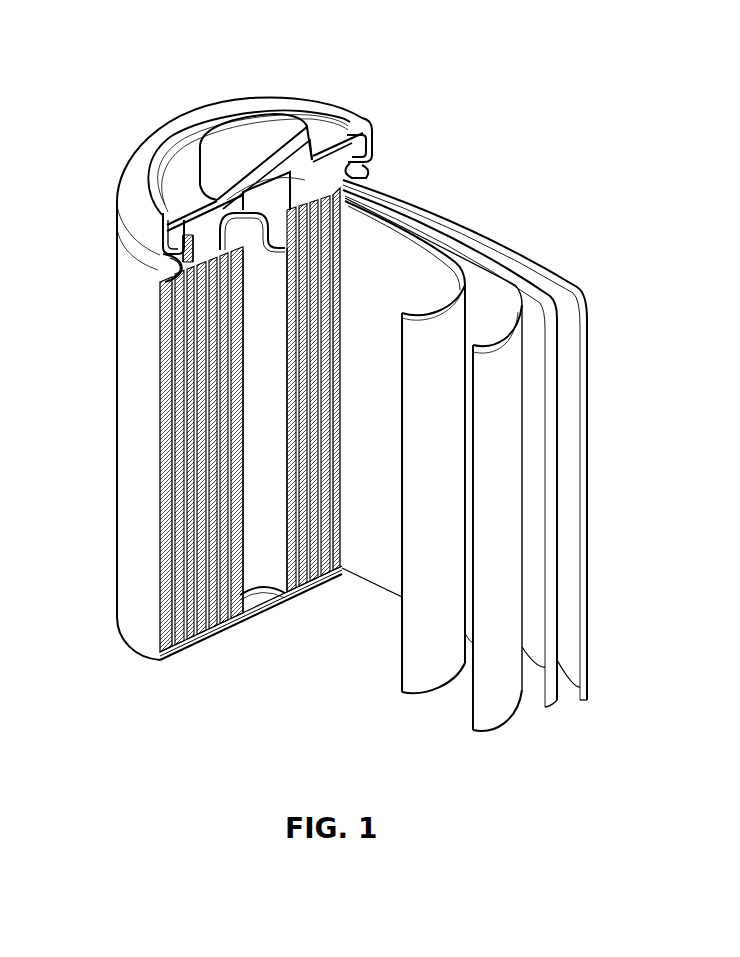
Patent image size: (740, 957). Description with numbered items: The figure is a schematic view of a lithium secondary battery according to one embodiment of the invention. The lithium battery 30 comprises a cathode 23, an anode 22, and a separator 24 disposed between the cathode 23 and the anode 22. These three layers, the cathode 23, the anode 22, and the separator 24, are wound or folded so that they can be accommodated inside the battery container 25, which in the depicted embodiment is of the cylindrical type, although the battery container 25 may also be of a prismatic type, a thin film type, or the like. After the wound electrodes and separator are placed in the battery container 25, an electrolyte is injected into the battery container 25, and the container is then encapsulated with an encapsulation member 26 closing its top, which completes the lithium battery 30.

The lithium battery 30 is at (343, 26).
The anode 22 is at (580, 313).
The cathode 23 is at (479, 265).
The separator 24 is at (538, 282).
The battery container 25 is at (138, 452).
The encapsulation member 26 is at (232, 135).